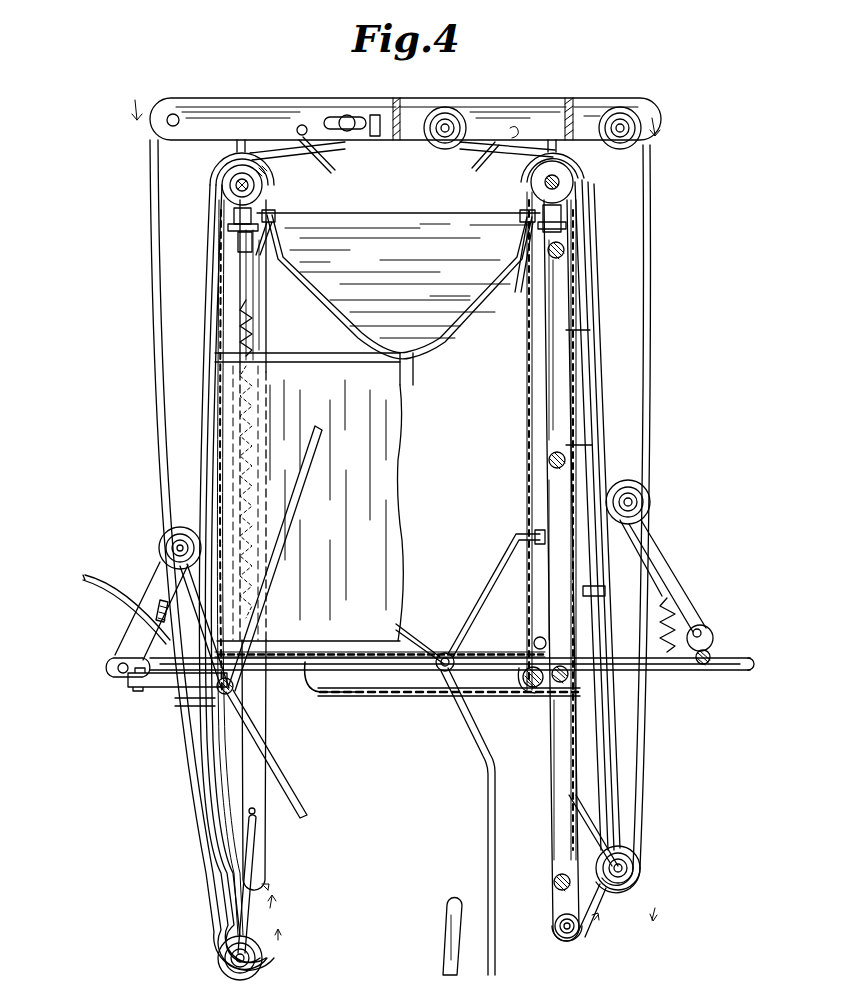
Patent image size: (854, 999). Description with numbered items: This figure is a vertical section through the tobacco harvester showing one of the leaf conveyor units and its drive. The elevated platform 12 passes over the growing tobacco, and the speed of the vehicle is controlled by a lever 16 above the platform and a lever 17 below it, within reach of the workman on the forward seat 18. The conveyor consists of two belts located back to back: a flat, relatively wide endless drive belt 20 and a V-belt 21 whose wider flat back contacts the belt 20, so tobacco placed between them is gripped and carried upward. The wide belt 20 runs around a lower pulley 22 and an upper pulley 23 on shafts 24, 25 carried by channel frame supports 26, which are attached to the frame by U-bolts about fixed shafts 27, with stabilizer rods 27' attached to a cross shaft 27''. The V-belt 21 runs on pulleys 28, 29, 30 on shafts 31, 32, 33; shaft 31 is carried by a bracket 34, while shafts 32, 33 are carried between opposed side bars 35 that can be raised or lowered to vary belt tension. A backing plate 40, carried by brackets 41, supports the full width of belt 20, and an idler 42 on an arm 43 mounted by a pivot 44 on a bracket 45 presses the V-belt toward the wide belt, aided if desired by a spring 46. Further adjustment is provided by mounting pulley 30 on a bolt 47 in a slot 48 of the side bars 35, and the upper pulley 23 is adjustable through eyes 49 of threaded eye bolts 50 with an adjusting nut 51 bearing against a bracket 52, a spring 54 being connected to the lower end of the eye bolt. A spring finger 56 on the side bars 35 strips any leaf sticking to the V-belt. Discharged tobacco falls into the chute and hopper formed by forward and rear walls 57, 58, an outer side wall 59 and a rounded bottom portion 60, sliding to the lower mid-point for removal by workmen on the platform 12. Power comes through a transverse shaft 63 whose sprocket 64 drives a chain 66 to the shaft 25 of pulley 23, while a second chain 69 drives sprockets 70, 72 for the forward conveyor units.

The elevated platform 12 is at (318, 652).
The lever 16 is at (302, 488).
The lever 17 is at (286, 776).
The forward seat 18 is at (446, 938).
The conveyor belt 20 is at (205, 283).
The conveyor belt 21 is at (455, 141).
The lower pulley 22 is at (556, 936).
The upper pulley 23 is at (262, 190).
The shaft 24 is at (558, 924).
The shaft 25 is at (248, 185).
The channel frame support 26 is at (266, 306).
The fixed shaft 27 is at (564, 637).
The stabilizer rod 27' is at (482, 593).
The cross shaft 27'' is at (445, 798).
The pulley 28 is at (252, 976).
The pulley 29 is at (150, 117).
The pulley 30 is at (450, 108).
The shaft 31 is at (236, 958).
The shaft 32 is at (174, 114).
The shaft 33 is at (327, 129).
The bracket 34 is at (253, 862).
The side bars 35 is at (222, 110).
The backing plate 40 is at (218, 215).
The bracket 41 is at (588, 590).
The idler 42 is at (160, 548).
The arm 43 is at (672, 572).
The pivot 44 is at (704, 632).
The bracket 45 is at (712, 656).
The spring 46 is at (664, 625).
The bolt or shaft 47 is at (348, 116).
The slot 48 is at (373, 114).
The eye 49 is at (236, 185).
The threaded eye bolt 50 is at (258, 252).
The adjusting nut 51 is at (258, 210).
The bracket 52 is at (230, 228).
The spring 54 is at (262, 335).
The spring finger 56 is at (326, 166).
The forward wall 57 is at (280, 222).
The rear wall 58 is at (522, 218).
The outer side wall 59 is at (390, 218).
The bottom portion 60 is at (412, 352).
The transverse shaft 63 is at (536, 690).
The sprocket 64 is at (523, 676).
The chain 66 is at (218, 300).
The chain 69 is at (180, 608).
The sprocket 70 is at (314, 698).
The sprocket 72 is at (168, 640).